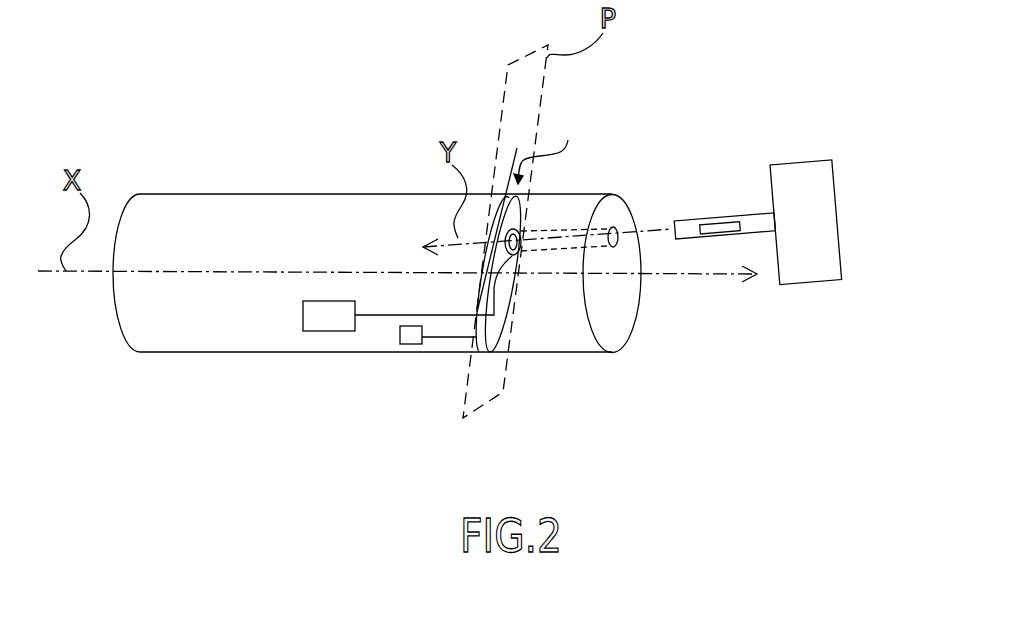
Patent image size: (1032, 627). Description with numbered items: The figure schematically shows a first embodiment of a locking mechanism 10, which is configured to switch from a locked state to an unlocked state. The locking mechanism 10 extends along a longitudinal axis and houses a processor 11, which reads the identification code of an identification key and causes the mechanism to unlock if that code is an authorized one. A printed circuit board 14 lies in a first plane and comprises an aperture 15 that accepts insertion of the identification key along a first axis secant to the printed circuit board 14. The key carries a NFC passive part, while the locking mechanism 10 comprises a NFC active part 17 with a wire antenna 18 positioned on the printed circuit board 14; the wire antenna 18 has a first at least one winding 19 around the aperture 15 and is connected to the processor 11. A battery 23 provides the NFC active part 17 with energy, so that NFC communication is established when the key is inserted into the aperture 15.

The locking mechanism 10 is at (233, 88).
The processor 11 is at (330, 331).
The printed circuit board 14 is at (503, 333).
The aperture 15 is at (523, 229).
The NFC active part 17 is at (551, 148).
The wire antenna 18 is at (494, 288).
The first at least one winding 19 is at (506, 217).
The battery 23 is at (415, 344).